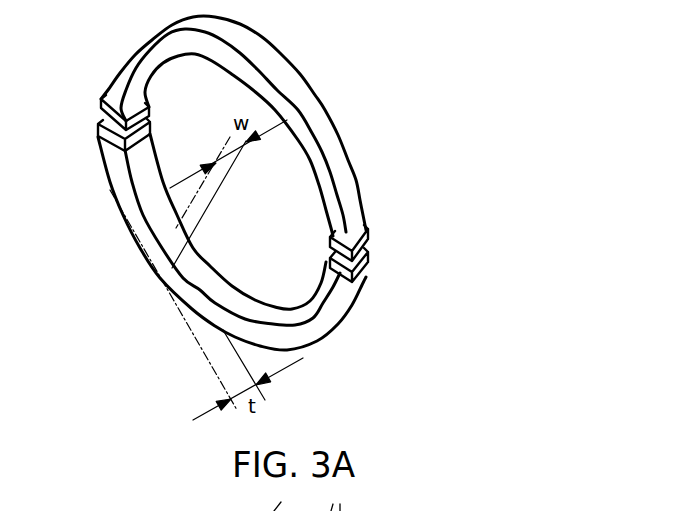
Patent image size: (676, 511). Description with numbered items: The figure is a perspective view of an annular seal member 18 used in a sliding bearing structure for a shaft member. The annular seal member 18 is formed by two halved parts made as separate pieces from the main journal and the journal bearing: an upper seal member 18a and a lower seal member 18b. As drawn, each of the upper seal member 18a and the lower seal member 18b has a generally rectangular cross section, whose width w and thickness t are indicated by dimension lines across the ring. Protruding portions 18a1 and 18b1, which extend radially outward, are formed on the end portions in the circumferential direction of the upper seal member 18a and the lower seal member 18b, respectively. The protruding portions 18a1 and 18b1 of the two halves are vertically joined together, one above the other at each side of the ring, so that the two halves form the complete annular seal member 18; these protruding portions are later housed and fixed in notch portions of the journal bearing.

The annular seal member 18 is at (294, 197).
The upper seal member 18a is at (275, 138).
The lower seal member 18b is at (266, 248).
The protruding portion 18a1 is at (108, 100).
The protruding portion 18b1 is at (98, 140).